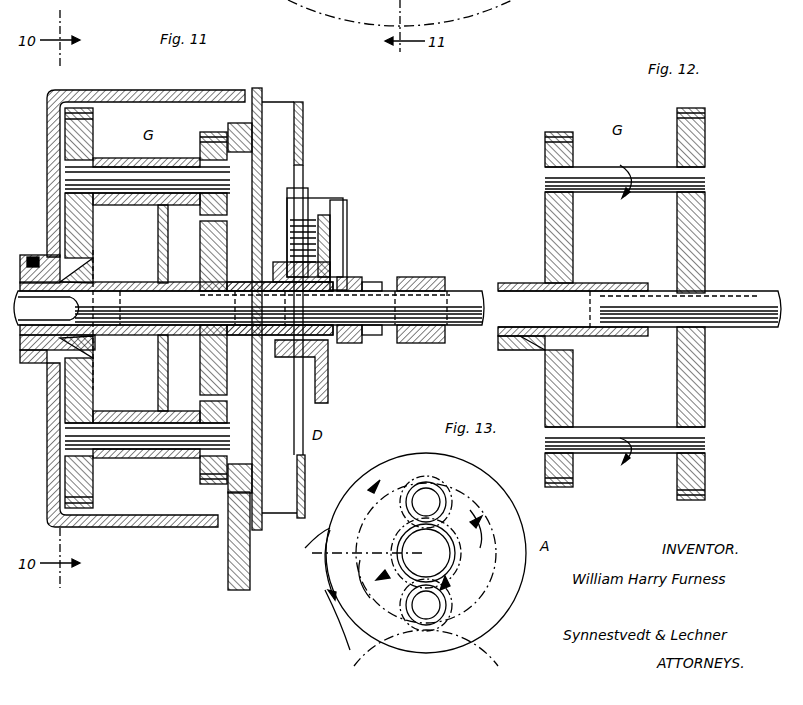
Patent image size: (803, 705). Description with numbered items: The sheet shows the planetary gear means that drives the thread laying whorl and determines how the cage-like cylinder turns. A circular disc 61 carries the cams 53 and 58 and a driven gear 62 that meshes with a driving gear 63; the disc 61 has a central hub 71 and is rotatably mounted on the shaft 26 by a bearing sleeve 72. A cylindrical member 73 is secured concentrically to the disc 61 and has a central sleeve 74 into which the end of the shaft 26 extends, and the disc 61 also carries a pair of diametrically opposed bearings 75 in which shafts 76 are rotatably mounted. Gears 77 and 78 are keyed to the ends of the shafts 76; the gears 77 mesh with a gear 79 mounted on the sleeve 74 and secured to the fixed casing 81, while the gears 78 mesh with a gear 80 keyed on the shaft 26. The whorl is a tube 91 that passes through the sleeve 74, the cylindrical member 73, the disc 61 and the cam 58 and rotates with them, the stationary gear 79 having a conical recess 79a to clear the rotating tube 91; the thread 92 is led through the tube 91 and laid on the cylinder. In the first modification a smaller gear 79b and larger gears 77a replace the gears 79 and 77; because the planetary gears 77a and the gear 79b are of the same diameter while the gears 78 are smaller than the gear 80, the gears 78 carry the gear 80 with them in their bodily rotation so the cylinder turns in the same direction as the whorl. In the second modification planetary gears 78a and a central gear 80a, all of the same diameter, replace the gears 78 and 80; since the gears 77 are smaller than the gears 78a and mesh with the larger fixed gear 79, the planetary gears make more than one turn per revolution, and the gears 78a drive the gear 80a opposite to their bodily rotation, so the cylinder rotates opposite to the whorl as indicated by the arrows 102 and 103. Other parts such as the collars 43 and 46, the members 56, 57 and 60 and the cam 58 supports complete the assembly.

In FIG. 11, the shaft 26 is at (450, 291).
In FIG. 12, the shaft 26 is at (748, 291).
In FIG. 11, the collar 43 is at (462, 322).
In FIG. 11, the collar 46 is at (420, 285).
In FIG. 11, the cam 53 is at (328, 390).
In FIG. 11, the cup 56 is at (347, 244).
In FIG. 11, the spring housing 57 is at (325, 198).
In FIG. 11, the cam 58 is at (303, 140).
In FIG. 11, the pin 60 is at (305, 190).
In FIG. 11, the circular disc 61 is at (258, 90).
In FIG. 11, the driven gear 62 is at (242, 123).
In FIG. 13, the driven gear 62 is at (494, 588).
In FIG. 11, the driving gear 63 is at (228, 570).
In FIG. 13, the driving gear 63 is at (488, 656).
In FIG. 11, the central hub 71 is at (240, 282).
In FIG. 11, the bearing sleeve 72 is at (238, 338).
In FIG. 11, the cylindrical member 73 is at (170, 205).
In FIG. 11, the central sleeve 74 is at (112, 282).
In FIG. 12, the central sleeve 74 is at (590, 336).
In FIG. 11, the bearings 75 is at (125, 160).
In FIG. 11, the shafts 76 is at (152, 175).
In FIG. 12, the shafts 76 is at (652, 172).
In FIG. 12, the planetary gear 77 is at (545, 153).
In FIG. 13, the planetary gear 77 is at (405, 490).
In FIG. 11, the larger planetary gear 77a is at (93, 122).
In FIG. 11, the planetary gear 78 is at (210, 137).
In FIG. 12, the planetary gear 78a is at (705, 150).
In FIG. 13, the planetary gear 78a is at (432, 488).
In FIG. 12, the fixed gear 79 is at (545, 376).
In FIG. 13, the fixed gear 79 is at (400, 536).
In FIG. 12, the conical recess 79a is at (573, 362).
In FIG. 11, the smaller gear 79b is at (80, 362).
In FIG. 11, the gear 80 is at (200, 352).
In FIG. 12, the central gear 80a is at (705, 358).
In FIG. 13, the central gear 80a is at (452, 562).
In FIG. 11, the fixed casing 81 is at (120, 90).
In FIG. 11, the tube 91 is at (33, 287).
In FIG. 13, the thread 92 is at (318, 568).
In FIG. 13, the arrow 102 is at (322, 605).
In FIG. 13, the arrow 103 is at (312, 548).